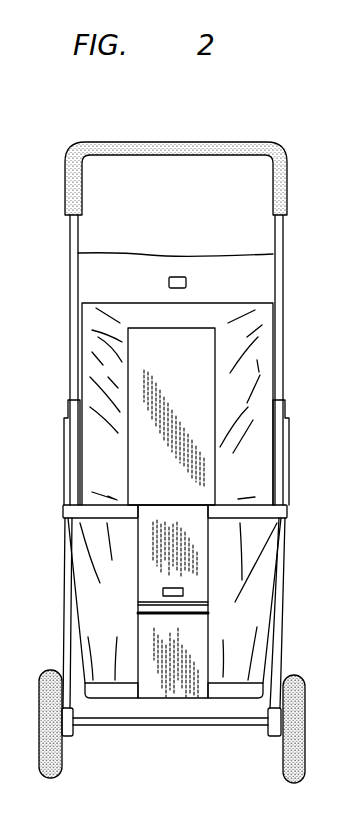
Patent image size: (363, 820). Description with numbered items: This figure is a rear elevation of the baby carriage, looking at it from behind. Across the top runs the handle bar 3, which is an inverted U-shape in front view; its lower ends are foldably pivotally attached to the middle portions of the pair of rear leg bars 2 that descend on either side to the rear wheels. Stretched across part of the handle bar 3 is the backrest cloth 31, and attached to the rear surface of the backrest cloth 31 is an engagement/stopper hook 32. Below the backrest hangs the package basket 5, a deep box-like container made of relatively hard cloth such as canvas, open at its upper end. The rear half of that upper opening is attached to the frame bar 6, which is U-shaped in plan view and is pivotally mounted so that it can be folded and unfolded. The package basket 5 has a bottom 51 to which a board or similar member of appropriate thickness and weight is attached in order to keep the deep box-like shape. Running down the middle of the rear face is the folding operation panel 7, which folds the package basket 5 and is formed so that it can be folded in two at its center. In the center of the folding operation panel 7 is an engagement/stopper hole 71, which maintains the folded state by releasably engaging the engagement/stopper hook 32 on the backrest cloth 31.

The rear leg bars 2 is at (67, 653).
The handle bar 3 is at (250, 147).
The package basket 5 is at (255, 608).
The frame bar 6 is at (253, 513).
The folding operation panel 7 is at (145, 635).
The backrest cloth 31 is at (257, 328).
The engagement/stopper hook 32 is at (178, 277).
The bottom 51 is at (113, 693).
The engagement/stopper hole 71 is at (185, 589).